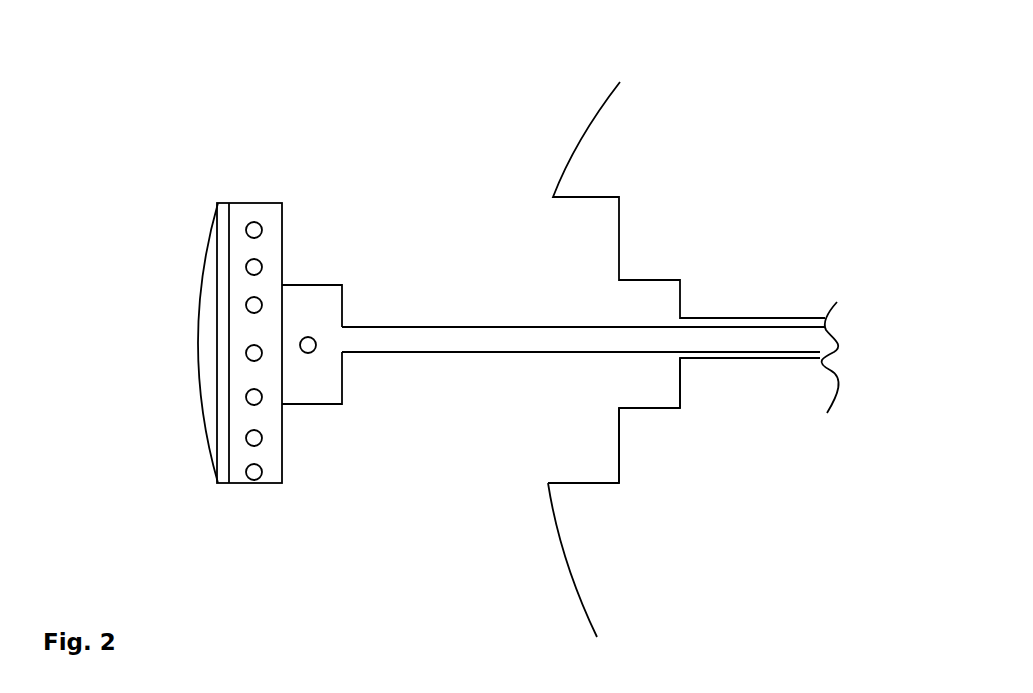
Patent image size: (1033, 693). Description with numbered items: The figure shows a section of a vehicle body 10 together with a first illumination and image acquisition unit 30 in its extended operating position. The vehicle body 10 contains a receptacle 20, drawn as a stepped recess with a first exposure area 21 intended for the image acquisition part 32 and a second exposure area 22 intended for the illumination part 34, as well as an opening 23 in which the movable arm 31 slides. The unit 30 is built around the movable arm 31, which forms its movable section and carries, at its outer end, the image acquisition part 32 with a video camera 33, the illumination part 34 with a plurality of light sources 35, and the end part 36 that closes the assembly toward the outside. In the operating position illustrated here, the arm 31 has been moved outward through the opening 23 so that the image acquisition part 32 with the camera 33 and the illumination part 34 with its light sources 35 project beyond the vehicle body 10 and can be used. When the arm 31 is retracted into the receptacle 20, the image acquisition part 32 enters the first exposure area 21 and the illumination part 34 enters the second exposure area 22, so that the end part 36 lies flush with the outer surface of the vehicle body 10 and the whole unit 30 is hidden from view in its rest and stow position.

The vehicle body 10 is at (580, 592).
The receptacle 20 is at (450, 376).
The first exposure area 21 is at (668, 379).
The second exposure area 22 is at (607, 439).
The opening 23 is at (717, 359).
The illumination and image acquisition unit 30 is at (434, 147).
The movable arm 31 is at (490, 327).
The image acquisition part 32 is at (316, 390).
The video camera 33 is at (313, 340).
The illumination part 34 is at (255, 483).
The light sources 35 is at (250, 442).
The end part 36 is at (207, 248).